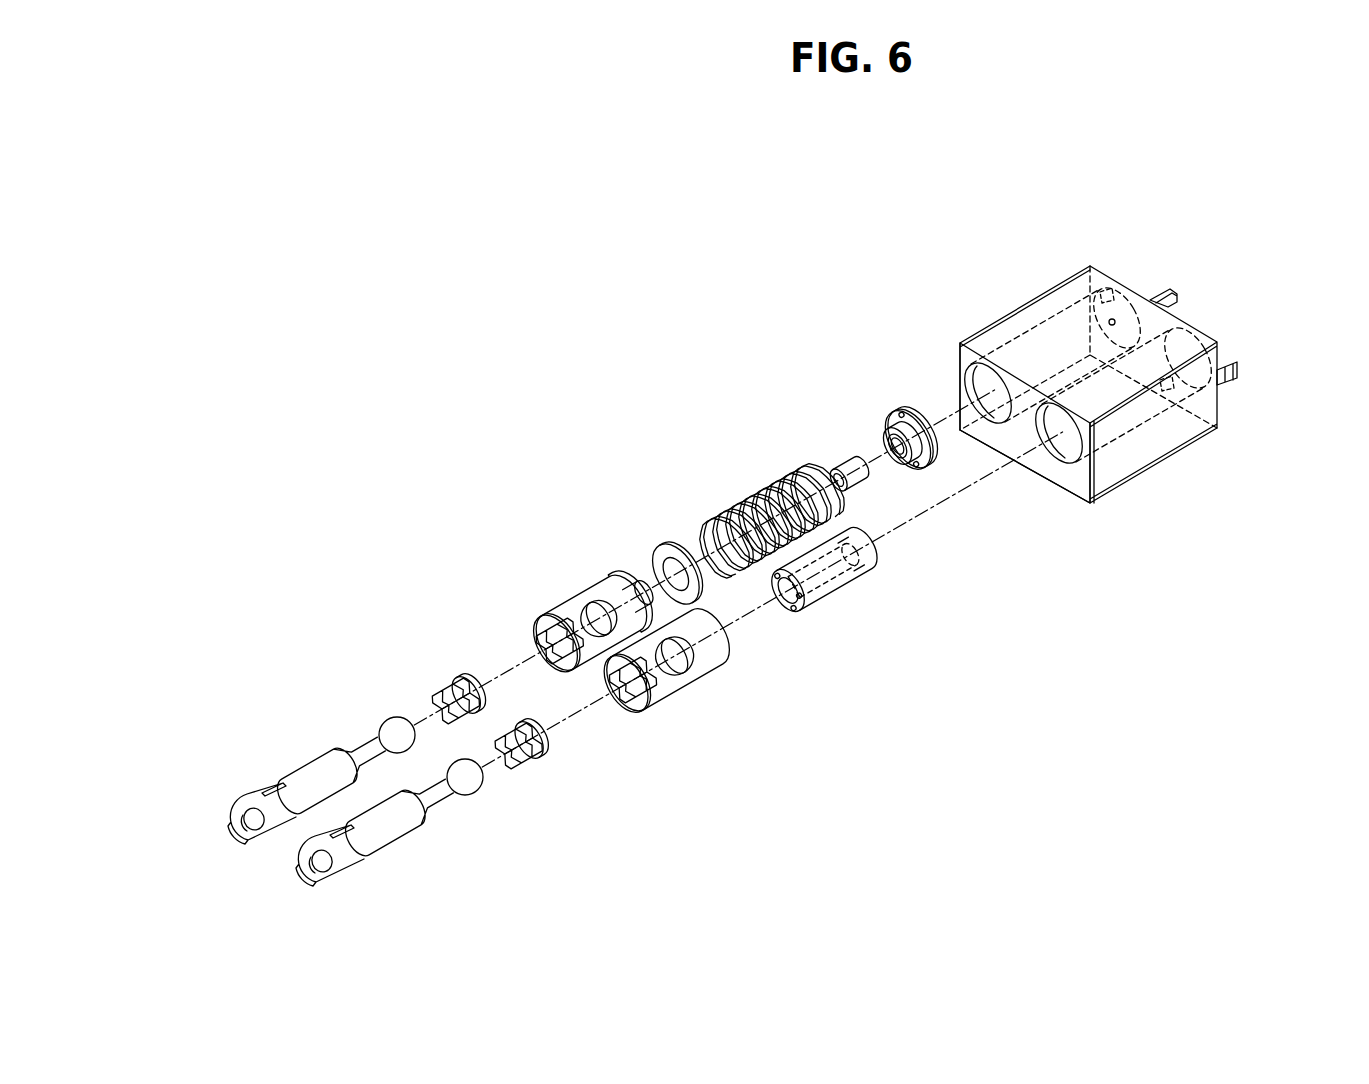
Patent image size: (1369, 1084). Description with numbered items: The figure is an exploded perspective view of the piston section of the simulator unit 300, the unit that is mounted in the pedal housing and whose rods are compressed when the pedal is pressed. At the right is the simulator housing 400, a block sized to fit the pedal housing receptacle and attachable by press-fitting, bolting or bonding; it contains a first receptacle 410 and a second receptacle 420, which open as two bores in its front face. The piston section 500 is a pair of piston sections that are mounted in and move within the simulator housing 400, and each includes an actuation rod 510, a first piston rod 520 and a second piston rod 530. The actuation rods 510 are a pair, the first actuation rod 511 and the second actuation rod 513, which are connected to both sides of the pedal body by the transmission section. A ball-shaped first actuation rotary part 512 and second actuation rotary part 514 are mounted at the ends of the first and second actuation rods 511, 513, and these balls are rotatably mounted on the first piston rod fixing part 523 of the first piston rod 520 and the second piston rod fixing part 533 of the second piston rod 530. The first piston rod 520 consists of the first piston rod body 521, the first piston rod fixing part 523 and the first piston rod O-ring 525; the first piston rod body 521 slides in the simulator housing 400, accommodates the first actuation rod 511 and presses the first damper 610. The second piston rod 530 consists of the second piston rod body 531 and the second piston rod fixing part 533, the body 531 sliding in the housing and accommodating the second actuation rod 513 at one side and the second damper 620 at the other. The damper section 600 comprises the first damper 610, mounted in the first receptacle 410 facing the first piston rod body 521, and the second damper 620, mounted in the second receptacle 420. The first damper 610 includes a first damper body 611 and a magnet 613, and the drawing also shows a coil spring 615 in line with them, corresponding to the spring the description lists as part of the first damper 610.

The simulator unit 300 is at (1045, 231).
The simulator housing 400 is at (1195, 437).
The first receptacle 410 is at (958, 343).
The second receptacle 420 is at (1086, 460).
The piston section 500 is at (222, 673).
The actuation rod 510 is at (288, 907).
The first actuation rod 511 is at (302, 780).
The first actuation rotary part 512 is at (390, 726).
The second actuation rod 513 is at (380, 830).
The second actuation rotary part 514 is at (473, 790).
The first piston rod 520 is at (518, 499).
The first piston rod body 521 is at (567, 605).
The first piston rod fixing part 523 is at (458, 668).
The first piston rod O-ring 525 is at (655, 553).
The second piston rod 530 is at (682, 814).
The second piston rod body 531 is at (690, 702).
The second piston rod fixing part 533 is at (545, 762).
The damper section 600 is at (936, 700).
The first damper 610 is at (713, 403).
The first damper body 611 is at (893, 420).
The magnet 613 is at (838, 460).
The coil spring 615 is at (710, 500).
The second damper 620 is at (833, 583).